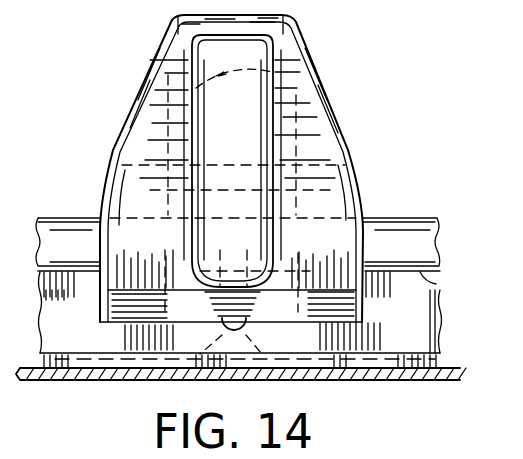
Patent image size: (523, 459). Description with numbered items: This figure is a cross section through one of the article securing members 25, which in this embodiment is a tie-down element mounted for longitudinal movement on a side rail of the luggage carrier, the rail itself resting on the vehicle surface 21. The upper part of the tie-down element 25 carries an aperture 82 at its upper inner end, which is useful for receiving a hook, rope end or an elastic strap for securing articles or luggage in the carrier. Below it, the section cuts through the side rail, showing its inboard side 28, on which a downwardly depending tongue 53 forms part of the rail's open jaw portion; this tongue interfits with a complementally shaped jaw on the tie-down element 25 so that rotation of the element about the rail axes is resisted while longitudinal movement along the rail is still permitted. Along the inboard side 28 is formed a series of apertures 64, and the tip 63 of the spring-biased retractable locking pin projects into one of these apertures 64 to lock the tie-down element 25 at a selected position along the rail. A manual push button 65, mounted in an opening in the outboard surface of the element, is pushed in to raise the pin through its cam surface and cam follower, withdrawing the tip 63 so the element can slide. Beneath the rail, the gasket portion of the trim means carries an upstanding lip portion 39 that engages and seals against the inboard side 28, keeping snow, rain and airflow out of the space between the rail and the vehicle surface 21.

The vehicle surface 21 is at (440, 372).
The article securing member 25 is at (348, 132).
The inboard side 28 is at (440, 305).
The upstanding lip portion 39 is at (398, 363).
The downwardly depending tongue 53 is at (442, 276).
The tip 63 is at (157, 380).
The aperture 64 is at (247, 325).
The push button 65 is at (300, 85).
The aperture 82 is at (207, 163).